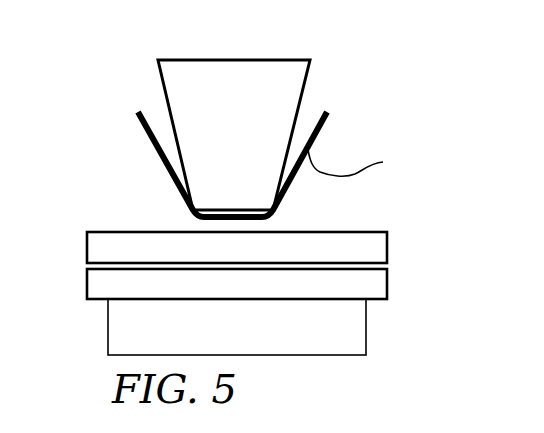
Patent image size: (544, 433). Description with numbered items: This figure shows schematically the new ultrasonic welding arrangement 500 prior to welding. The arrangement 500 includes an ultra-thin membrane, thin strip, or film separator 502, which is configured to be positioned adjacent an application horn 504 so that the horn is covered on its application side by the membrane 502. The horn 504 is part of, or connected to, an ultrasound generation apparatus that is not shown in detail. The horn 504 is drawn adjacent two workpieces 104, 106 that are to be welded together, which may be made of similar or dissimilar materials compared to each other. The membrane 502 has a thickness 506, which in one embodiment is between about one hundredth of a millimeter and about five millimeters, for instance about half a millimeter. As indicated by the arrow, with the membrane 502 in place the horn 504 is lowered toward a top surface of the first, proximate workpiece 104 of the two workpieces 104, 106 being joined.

The ultrasonic welding arrangement 500 is at (380, 36).
The membrane 502 is at (308, 150).
The application horn 504 is at (159, 60).
The thickness 506 is at (168, 108).
The first workpiece 104 is at (387, 234).
The second workpiece 106 is at (387, 290).